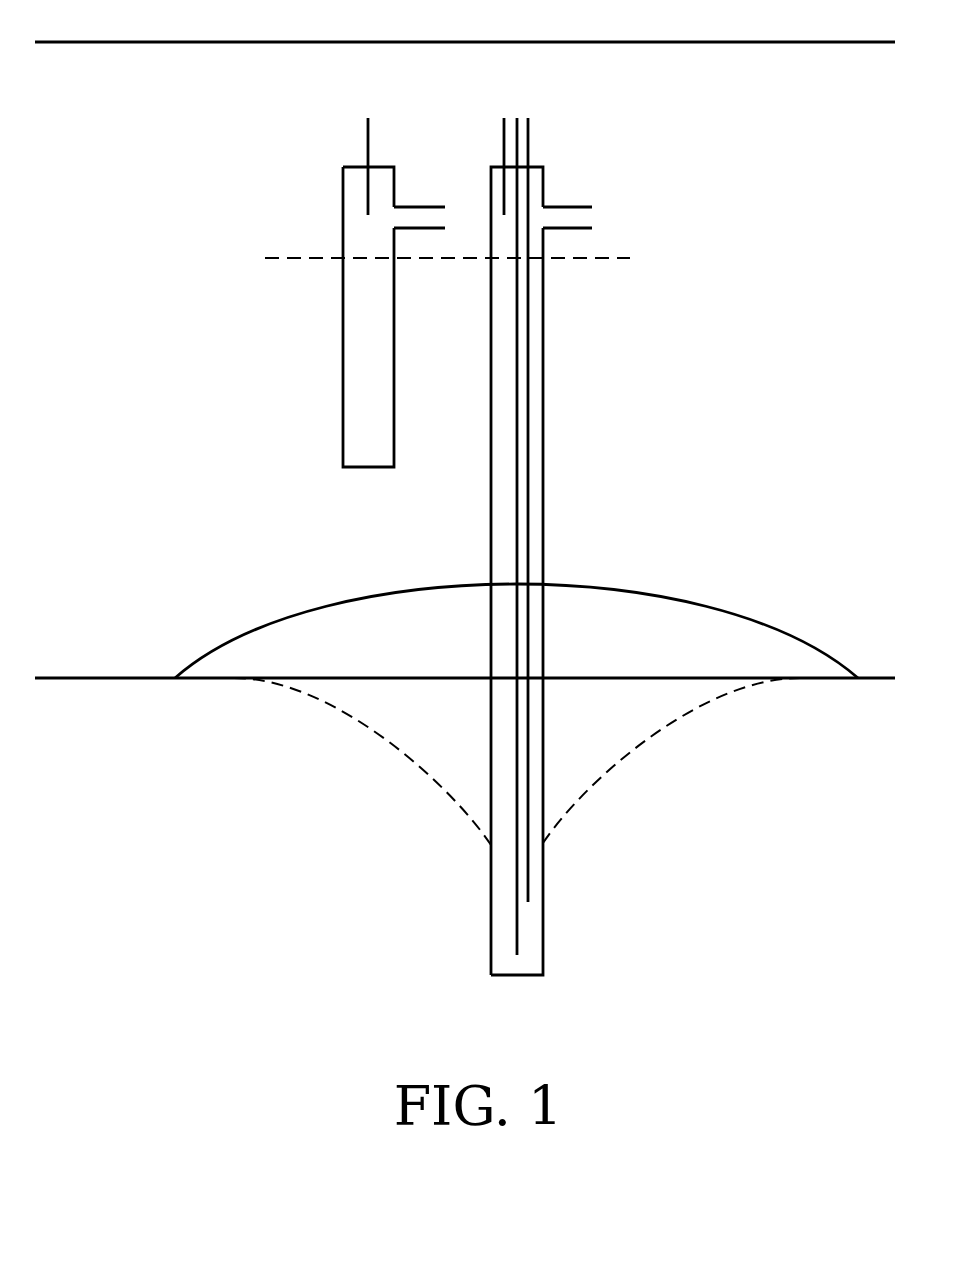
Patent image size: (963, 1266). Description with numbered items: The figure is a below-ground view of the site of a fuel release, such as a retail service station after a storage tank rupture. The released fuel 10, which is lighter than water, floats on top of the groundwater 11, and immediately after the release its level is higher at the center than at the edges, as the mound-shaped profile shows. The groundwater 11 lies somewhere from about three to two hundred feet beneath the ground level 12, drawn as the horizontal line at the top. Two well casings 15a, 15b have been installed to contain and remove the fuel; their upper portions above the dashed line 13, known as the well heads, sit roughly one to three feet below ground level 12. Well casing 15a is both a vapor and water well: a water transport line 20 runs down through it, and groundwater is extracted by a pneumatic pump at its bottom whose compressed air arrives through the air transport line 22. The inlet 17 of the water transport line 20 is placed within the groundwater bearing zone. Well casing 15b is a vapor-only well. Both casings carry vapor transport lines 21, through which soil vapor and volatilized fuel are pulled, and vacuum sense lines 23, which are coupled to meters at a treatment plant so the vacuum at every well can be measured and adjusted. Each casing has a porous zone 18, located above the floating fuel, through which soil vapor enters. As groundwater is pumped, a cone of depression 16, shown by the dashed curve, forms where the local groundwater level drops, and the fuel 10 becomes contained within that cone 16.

The fuel 10 is at (278, 617).
The groundwater 11 is at (55, 677).
The ground level 12 is at (805, 42).
The dashed line 13 is at (630, 258).
The well casing 15a is at (544, 376).
The well casing 15b is at (342, 364).
The cone of depression 16 is at (665, 728).
The inlet 17 is at (530, 900).
The porous zone 18 is at (491, 450).
The water transport line 20 is at (531, 130).
The vapor transport line 21 is at (424, 206).
The air transport line 22 is at (517, 118).
The vacuum sense line 23 is at (366, 130).